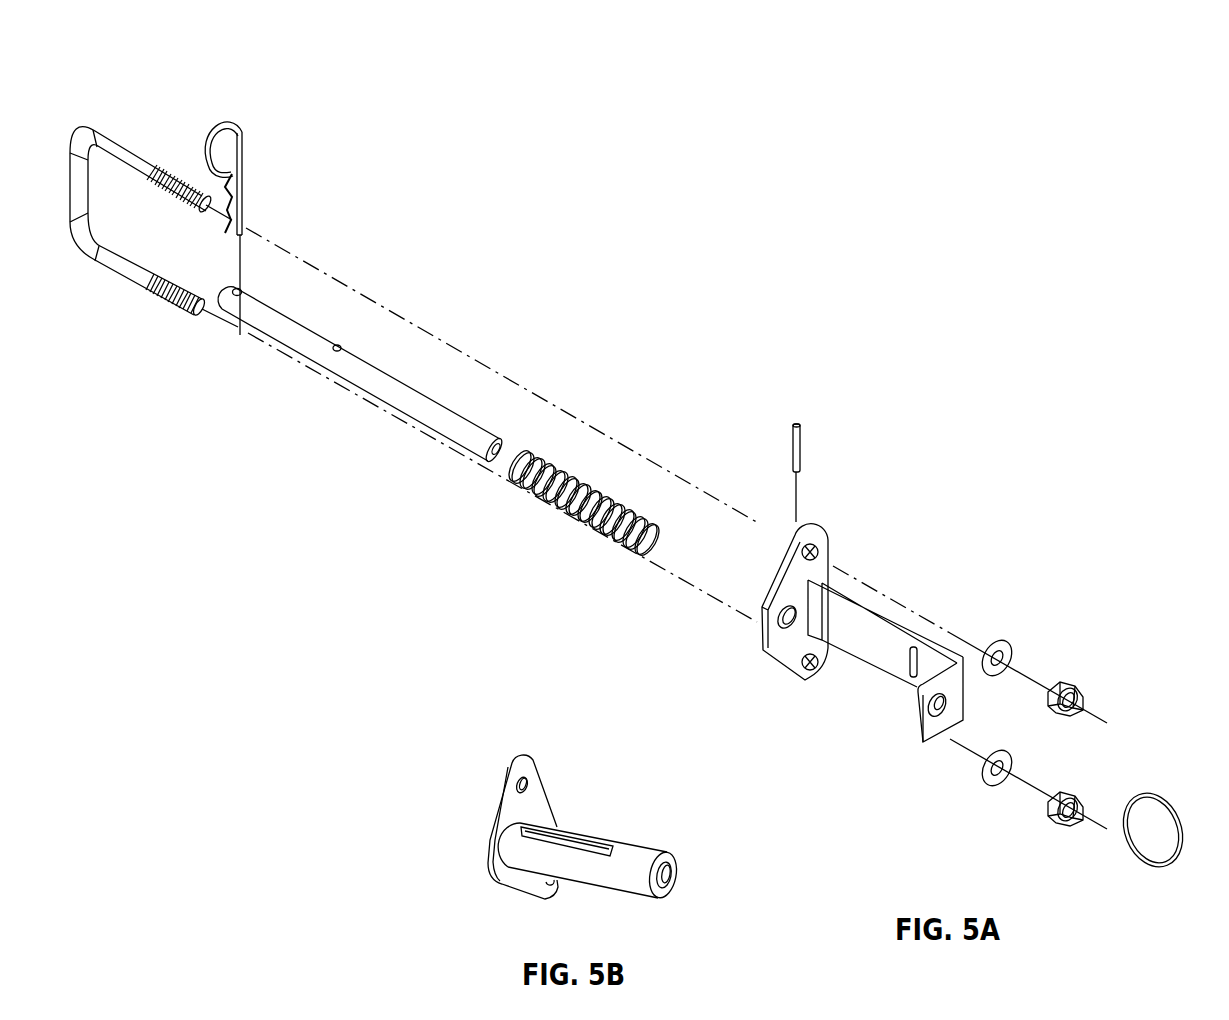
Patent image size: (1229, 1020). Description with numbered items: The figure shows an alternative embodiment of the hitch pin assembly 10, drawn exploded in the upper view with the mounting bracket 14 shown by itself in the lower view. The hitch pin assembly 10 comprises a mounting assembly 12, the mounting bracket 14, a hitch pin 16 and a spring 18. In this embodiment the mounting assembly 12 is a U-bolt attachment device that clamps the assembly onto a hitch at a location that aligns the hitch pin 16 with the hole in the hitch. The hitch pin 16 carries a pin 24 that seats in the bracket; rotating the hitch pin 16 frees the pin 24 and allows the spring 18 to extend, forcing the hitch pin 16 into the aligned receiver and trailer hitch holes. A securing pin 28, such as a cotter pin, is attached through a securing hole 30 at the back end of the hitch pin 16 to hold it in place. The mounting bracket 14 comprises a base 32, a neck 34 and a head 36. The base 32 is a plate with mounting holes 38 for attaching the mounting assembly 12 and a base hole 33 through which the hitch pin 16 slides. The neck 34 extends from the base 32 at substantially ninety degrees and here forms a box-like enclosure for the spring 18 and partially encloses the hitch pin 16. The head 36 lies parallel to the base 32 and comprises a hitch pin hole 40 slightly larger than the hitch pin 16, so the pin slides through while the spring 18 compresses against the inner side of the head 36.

In FIG. 5A, the hitch pin assembly 10 is at (598, 330).
In FIG. 5A, the mounting assembly 12 is at (129, 132).
In FIG. 5A, the mounting bracket 14 is at (919, 590).
In FIG. 5B, the mounting bracket 14 is at (463, 734).
In FIG. 5A, the hitch pin 16 is at (430, 413).
In FIG. 5A, the spring 18 is at (596, 474).
In FIG. 5A, the pin 24 is at (793, 440).
In FIG. 5A, the securing pin 28 is at (232, 128).
In FIG. 5A, the securing hole 30 is at (250, 276).
In FIG. 5A, the base 32 is at (780, 648).
In FIG. 5B, the base 32 is at (525, 766).
In FIG. 5A, the base hole 33 is at (777, 618).
In FIG. 5A, the neck 34 is at (865, 650).
In FIG. 5B, the neck 34 is at (635, 857).
In FIG. 5A, the head 36 is at (915, 728).
In FIG. 5B, the head 36 is at (680, 862).
In FIG. 5A, the mounting holes 38 is at (791, 563).
In FIG. 5B, the mounting holes 38 is at (537, 784).
In FIG. 5A, the hitch pin hole 40 is at (940, 720).